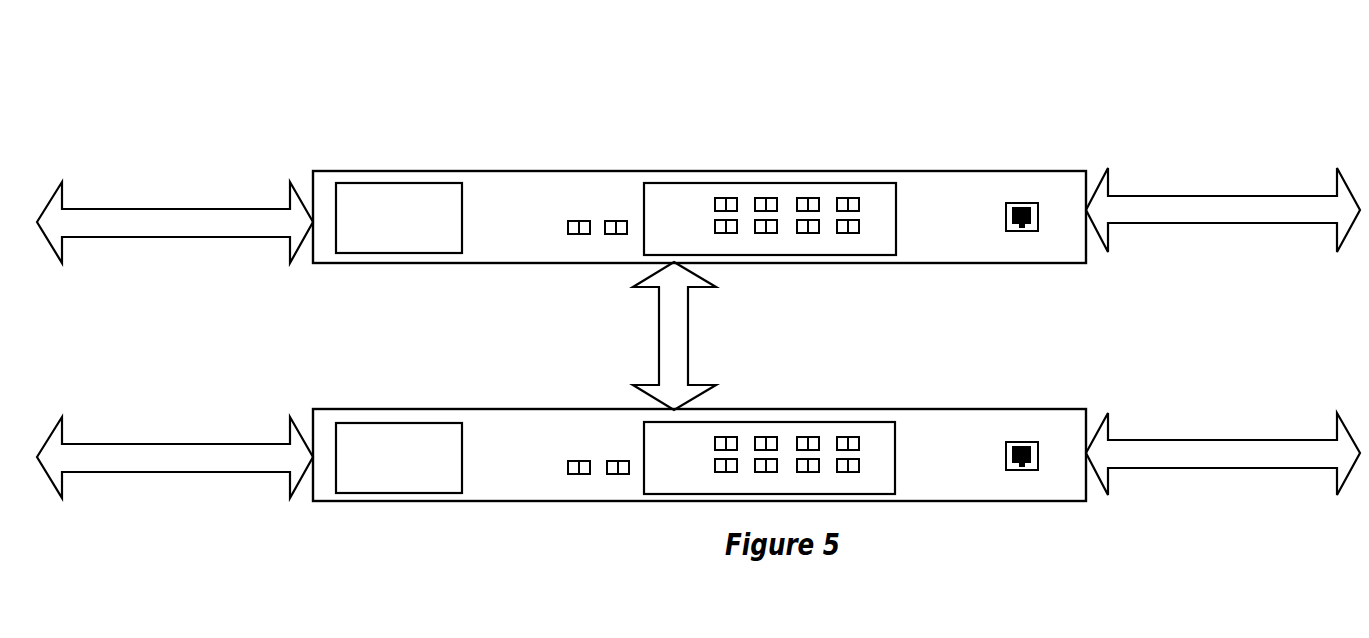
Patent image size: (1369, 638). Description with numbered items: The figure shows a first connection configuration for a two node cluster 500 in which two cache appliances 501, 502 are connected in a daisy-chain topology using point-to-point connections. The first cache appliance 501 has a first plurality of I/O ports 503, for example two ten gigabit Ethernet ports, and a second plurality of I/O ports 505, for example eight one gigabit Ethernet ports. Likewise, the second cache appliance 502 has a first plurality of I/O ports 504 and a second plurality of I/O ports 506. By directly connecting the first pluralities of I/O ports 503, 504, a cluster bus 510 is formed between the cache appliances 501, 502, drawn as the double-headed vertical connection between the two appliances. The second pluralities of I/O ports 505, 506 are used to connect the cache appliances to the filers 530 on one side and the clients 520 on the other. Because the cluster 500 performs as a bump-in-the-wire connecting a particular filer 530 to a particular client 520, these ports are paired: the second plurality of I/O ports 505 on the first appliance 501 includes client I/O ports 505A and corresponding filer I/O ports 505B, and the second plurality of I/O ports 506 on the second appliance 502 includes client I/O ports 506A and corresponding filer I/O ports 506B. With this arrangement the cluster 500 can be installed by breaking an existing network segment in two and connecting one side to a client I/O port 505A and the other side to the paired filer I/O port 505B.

The two node cluster 500 is at (1163, 118).
The first cache appliance 501 is at (503, 170).
The second cache appliance 502 is at (502, 408).
The first plurality of I/O ports 503 is at (578, 206).
The first plurality of I/O ports 504 is at (593, 444).
The second plurality of I/O ports 505 is at (830, 182).
The client I/O ports 505A is at (872, 204).
The filer I/O ports 505B is at (872, 228).
The second plurality of I/O ports 506 is at (815, 422).
The client I/O ports 506A is at (872, 443).
The filer I/O ports 506B is at (872, 466).
The cluster bus 510 is at (690, 325).
The clients 520 is at (165, 338).
The filers 530 is at (1255, 338).